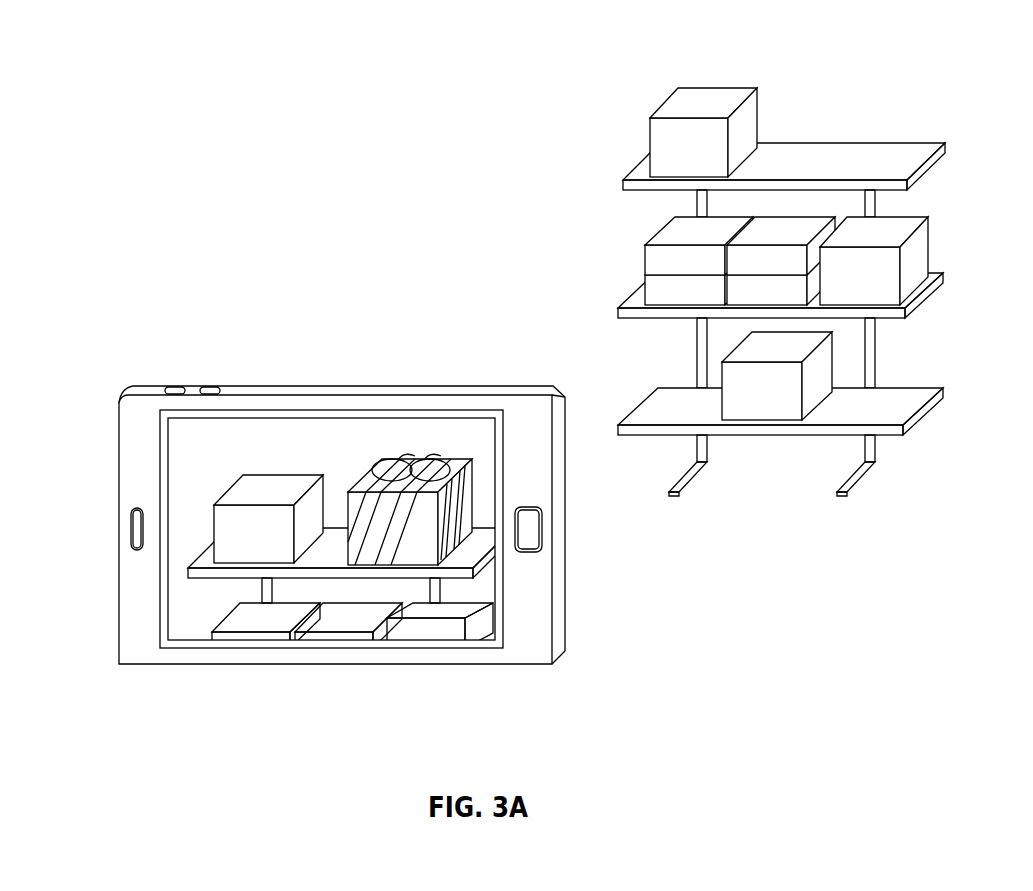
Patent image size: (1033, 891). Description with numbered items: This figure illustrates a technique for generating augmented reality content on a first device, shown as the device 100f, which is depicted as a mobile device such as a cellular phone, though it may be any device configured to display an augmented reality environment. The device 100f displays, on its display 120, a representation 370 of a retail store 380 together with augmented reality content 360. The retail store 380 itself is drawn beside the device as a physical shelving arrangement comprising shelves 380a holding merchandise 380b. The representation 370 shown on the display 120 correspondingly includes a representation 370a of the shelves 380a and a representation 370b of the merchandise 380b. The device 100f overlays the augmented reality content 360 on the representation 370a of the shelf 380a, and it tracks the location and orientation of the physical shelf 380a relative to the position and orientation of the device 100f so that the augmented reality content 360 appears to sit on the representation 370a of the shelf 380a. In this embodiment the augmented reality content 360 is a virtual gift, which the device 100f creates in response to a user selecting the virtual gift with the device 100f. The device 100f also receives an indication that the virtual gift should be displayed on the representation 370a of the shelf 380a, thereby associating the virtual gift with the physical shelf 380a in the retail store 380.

The device 100f is at (120, 350).
The display 120 is at (160, 630).
The representation of retail store 370 is at (277, 440).
The representation of shelves 370a is at (207, 548).
The representation of merchandise 370b is at (222, 485).
The augmented reality content 360 is at (381, 452).
The retail store 380 is at (692, 55).
The shelves 380a is at (641, 170).
The merchandise 380b is at (655, 108).